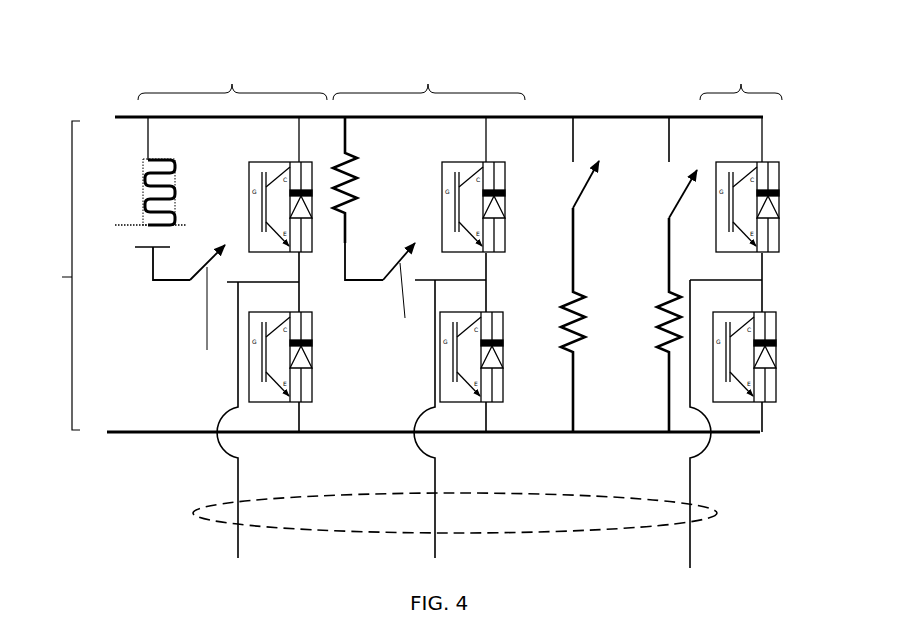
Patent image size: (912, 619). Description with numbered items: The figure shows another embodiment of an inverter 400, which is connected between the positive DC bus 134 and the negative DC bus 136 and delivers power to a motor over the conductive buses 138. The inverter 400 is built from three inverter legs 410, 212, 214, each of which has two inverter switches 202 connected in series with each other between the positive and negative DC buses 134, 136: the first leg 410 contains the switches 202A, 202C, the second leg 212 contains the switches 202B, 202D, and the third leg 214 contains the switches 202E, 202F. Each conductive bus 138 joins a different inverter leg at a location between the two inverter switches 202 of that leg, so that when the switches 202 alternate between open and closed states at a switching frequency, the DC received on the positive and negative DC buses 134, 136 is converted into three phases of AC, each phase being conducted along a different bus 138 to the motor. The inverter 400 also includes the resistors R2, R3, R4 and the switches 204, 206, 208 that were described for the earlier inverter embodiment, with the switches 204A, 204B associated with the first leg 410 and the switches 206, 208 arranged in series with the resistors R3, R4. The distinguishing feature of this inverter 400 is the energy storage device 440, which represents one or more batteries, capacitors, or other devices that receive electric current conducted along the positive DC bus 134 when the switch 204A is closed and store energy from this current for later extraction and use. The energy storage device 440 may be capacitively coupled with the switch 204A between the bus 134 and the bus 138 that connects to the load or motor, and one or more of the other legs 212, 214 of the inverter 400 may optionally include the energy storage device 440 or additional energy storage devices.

The positive DC bus 134 is at (128, 117).
The negative DC bus 136 is at (608, 433).
The conductive bus 138 is at (700, 508).
The inverter switch 202 is at (247, 176).
The inverter switch 202A is at (250, 190).
The inverter switch 202B is at (442, 196).
The inverter switch 202C is at (313, 352).
The inverter switch 202D is at (505, 386).
The inverter switch 202E is at (778, 198).
The inverter switch 202F is at (777, 355).
The switch 204 is at (190, 290).
The switch 204A is at (198, 321).
The switch 204B is at (383, 296).
The switch 206 is at (582, 185).
The switch 208 is at (672, 202).
The inverter leg 212 is at (429, 79).
The inverter leg 214 is at (741, 79).
The inverter 400 is at (46, 275).
The inverter leg 410 is at (232, 79).
The energy storage device 440 is at (143, 202).
The resistor R2 is at (361, 180).
The resistor R3 is at (560, 320).
The resistor R4 is at (655, 325).